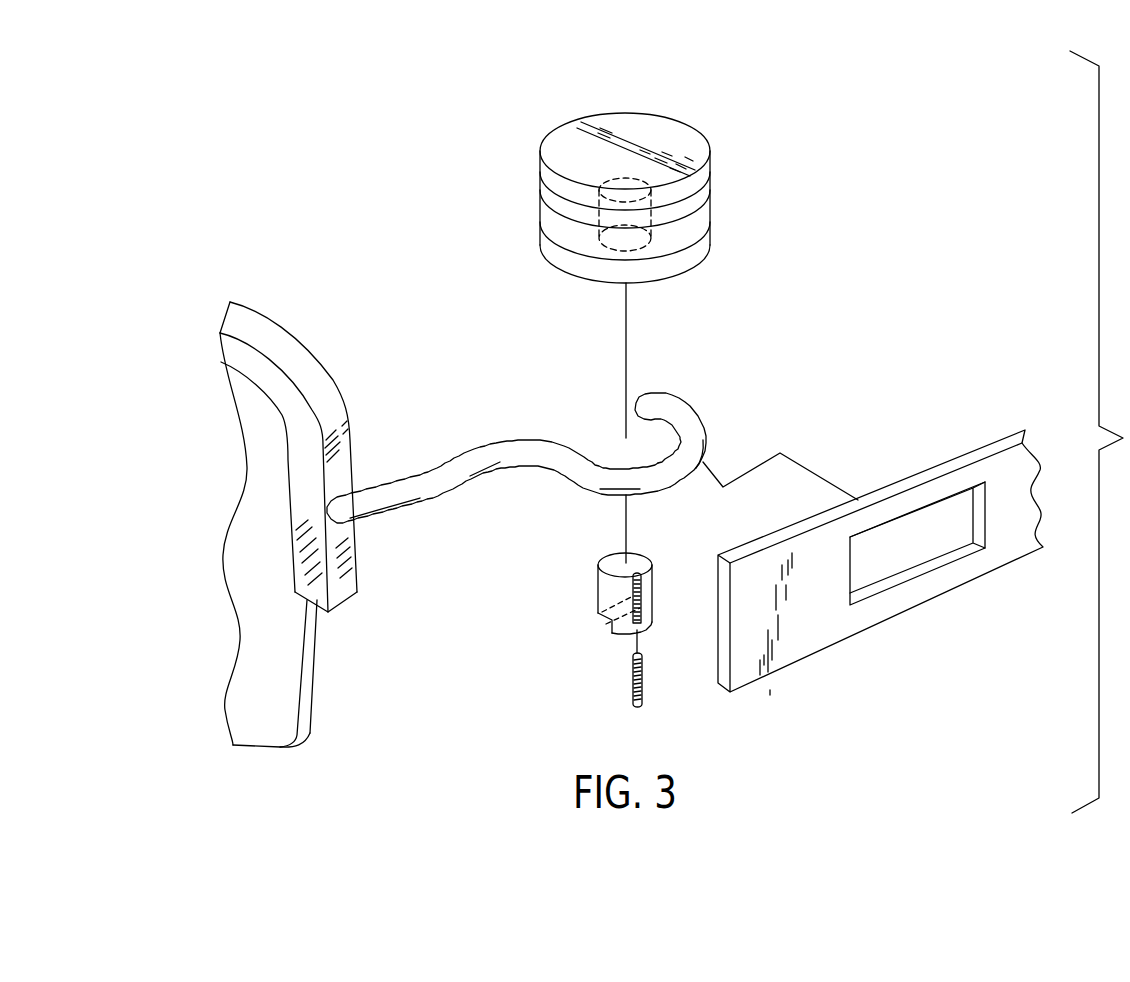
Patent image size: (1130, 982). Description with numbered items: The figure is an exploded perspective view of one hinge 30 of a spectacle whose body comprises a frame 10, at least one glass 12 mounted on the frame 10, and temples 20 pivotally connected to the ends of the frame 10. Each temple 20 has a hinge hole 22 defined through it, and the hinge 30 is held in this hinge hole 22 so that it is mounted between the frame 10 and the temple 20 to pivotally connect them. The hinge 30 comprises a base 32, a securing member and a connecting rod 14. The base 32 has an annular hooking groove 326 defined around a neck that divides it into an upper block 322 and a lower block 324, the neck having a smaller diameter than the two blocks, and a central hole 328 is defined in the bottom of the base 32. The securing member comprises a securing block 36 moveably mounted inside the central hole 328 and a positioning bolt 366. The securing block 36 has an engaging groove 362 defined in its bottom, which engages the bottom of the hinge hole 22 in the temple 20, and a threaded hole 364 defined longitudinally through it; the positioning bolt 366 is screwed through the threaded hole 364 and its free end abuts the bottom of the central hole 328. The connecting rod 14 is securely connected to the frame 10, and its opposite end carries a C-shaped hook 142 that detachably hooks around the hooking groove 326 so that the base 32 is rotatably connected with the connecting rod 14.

The frame 10 is at (282, 345).
The glass 12 is at (273, 743).
The connecting rod 14 is at (453, 480).
The C-shaped hook 142 is at (690, 427).
The temple 20 is at (1010, 552).
The hinge hole 22 is at (917, 577).
The hinge 30 is at (752, 163).
The base 32 is at (692, 115).
The upper block 322 is at (562, 148).
The lower block 324 is at (617, 275).
The hooking groove 326 is at (557, 227).
The central hole 328 is at (643, 248).
The securing block 36 is at (603, 588).
The engaging groove 362 is at (605, 622).
The threaded hole 364 is at (652, 587).
The positioning bolt 366 is at (640, 682).